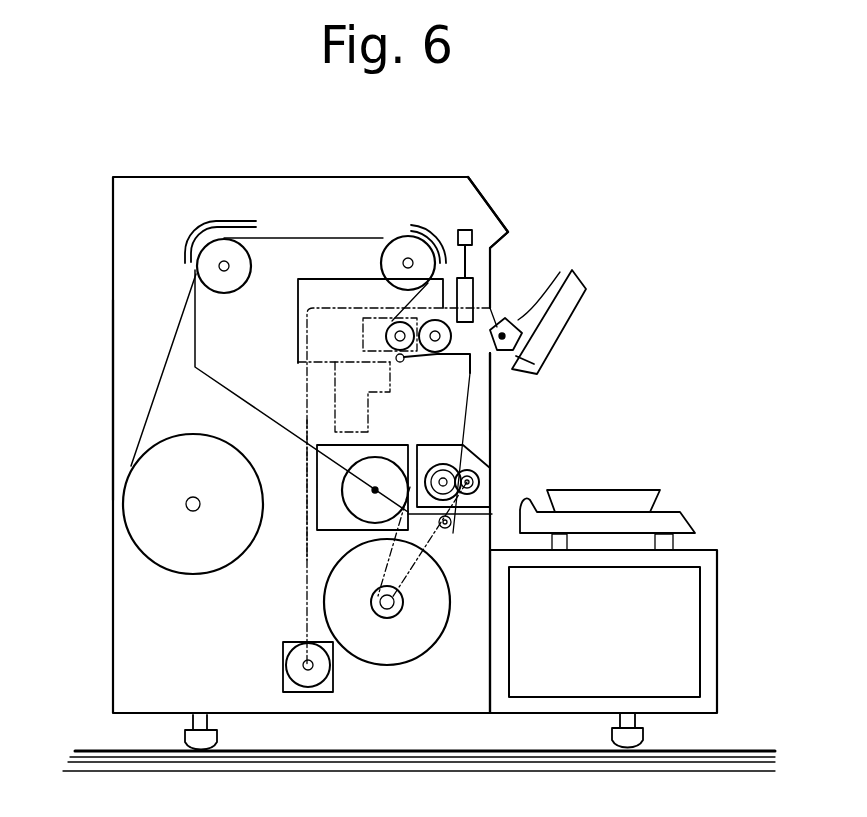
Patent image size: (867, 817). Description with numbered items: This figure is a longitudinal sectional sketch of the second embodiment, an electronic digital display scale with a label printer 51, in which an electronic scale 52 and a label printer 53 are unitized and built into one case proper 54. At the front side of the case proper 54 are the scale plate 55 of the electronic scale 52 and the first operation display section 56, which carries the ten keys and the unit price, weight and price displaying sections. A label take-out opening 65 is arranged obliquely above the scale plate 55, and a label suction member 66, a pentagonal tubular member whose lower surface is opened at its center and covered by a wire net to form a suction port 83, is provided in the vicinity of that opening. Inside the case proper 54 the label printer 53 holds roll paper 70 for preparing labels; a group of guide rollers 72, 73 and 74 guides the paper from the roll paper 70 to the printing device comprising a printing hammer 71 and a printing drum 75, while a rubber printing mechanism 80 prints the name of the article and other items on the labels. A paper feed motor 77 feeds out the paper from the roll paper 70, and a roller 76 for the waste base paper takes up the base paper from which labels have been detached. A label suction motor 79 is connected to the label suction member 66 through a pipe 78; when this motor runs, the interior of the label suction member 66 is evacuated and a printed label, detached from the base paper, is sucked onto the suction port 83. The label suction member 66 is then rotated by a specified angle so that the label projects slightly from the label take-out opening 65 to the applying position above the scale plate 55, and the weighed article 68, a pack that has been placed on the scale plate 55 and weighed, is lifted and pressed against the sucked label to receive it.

The electronic digital display scale with a label printer 51 is at (264, 175).
The electronic scale 52 is at (685, 625).
The label printer 53 is at (113, 641).
The case proper 54 is at (113, 383).
The scale plate 55 is at (683, 523).
The No. 1 operation display section 56 is at (494, 200).
The label take-out opening 65 is at (493, 353).
The label suction member 66 is at (560, 272).
The weighed article 68 is at (637, 500).
The roll paper 70 is at (172, 557).
The printing hammer 71 is at (402, 363).
The guide roller 72 is at (207, 252).
The guide roller 73 is at (396, 255).
The guide roller 74 is at (392, 336).
The printing drum 75 is at (437, 356).
The roller for the waste base paper 76 is at (417, 637).
The paper feed motor 77 is at (362, 515).
The pipe 78 is at (307, 481).
The label suction motor 79 is at (333, 690).
The rubber printing mechanism 80 is at (467, 290).
The suction port 83 is at (537, 368).